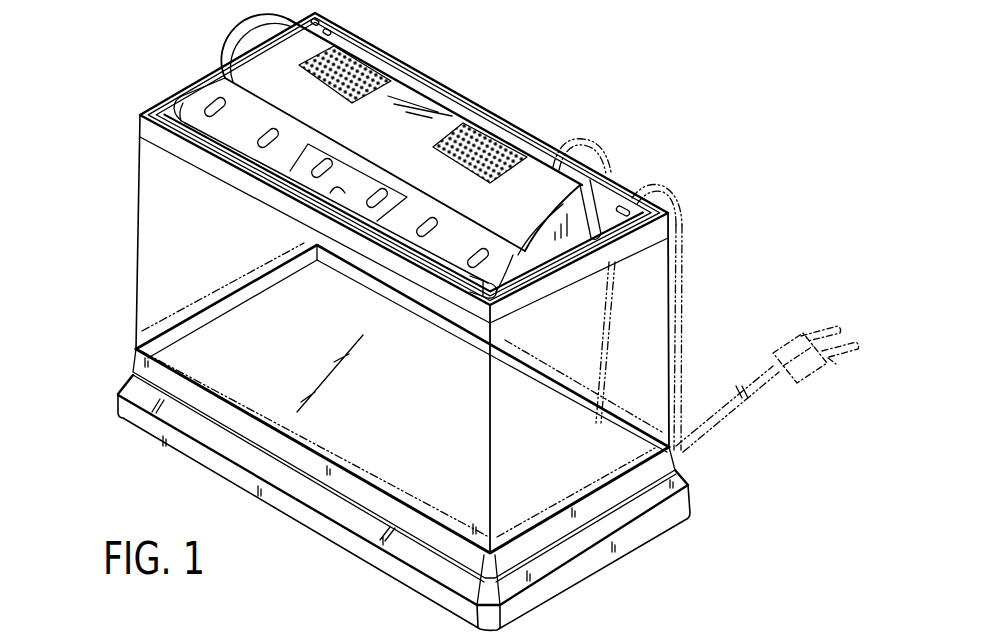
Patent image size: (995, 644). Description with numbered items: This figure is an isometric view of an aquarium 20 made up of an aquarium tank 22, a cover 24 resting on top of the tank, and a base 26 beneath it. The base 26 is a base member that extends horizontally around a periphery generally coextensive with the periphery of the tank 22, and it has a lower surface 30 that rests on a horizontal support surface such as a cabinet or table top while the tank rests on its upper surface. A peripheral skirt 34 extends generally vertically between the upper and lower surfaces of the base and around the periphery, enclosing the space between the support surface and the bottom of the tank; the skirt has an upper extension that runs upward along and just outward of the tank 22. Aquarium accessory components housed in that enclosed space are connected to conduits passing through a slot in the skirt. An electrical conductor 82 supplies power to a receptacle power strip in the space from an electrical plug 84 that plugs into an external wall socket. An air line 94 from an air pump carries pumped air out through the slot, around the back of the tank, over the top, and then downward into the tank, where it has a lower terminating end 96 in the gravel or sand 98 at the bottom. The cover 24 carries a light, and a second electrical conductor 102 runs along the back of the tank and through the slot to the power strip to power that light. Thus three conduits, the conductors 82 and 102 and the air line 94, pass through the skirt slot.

The aquarium 20 is at (86, 187).
The aquarium tank 22 is at (140, 246).
The cover 24 is at (250, 54).
The base 26 is at (138, 422).
The lower surface 30 is at (218, 478).
The peripheral skirt 34 is at (118, 402).
The electrical conductor 82 is at (714, 426).
The electrical plug 84 is at (830, 381).
The air line 94 is at (686, 255).
The lower terminating end 96 is at (598, 428).
The gravel or sand 98 is at (553, 496).
The electrical conductor 102 is at (598, 153).